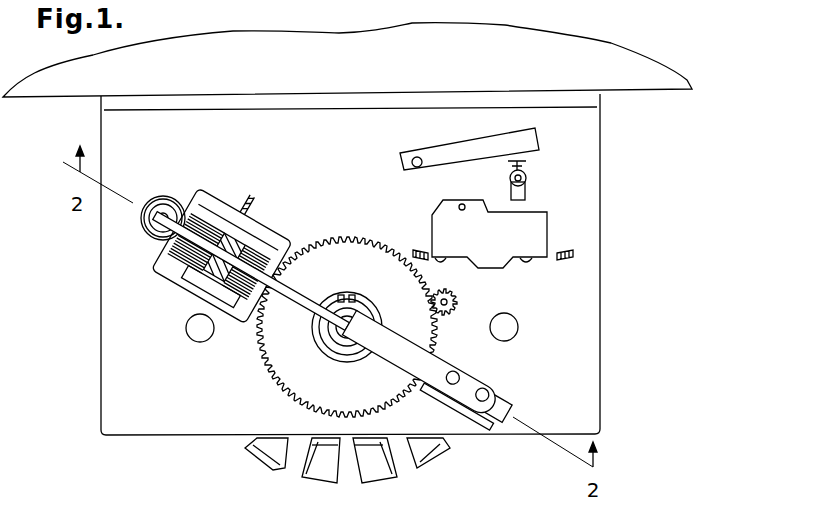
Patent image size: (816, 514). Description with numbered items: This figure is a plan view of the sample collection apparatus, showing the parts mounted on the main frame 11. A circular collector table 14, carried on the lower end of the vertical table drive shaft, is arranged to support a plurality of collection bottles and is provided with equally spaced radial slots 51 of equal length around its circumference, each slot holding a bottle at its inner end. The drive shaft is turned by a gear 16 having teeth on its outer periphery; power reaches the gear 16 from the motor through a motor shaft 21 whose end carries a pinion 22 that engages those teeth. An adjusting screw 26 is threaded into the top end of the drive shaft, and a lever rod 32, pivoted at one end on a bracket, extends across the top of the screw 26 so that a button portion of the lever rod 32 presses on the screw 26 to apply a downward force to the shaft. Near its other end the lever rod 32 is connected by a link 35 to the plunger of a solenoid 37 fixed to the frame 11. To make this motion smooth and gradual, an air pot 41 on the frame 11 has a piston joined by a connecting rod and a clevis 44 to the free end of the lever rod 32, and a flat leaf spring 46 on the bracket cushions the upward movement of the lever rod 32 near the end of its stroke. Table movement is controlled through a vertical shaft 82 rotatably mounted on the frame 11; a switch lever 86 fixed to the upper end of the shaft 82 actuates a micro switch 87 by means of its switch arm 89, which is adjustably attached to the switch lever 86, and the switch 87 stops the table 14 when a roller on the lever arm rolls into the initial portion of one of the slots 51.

The main frame 11 is at (585, 345).
The collector table 14 is at (323, 475).
The gear 16 is at (282, 363).
The motor shaft 21 is at (447, 310).
The pinion 22 is at (448, 298).
The adjusting screw 26 is at (352, 312).
The lever rod 32 is at (303, 302).
The link 35 is at (240, 253).
The solenoid 37 is at (226, 214).
The air pot 41 is at (160, 243).
The clevis 44 is at (160, 208).
The flat leaf spring 46 is at (435, 363).
The radial slots 51 is at (405, 468).
The vertical shaft 82 is at (417, 157).
The switch lever 86 is at (472, 148).
The switch 87 is at (505, 240).
The switch arm 89 is at (498, 197).